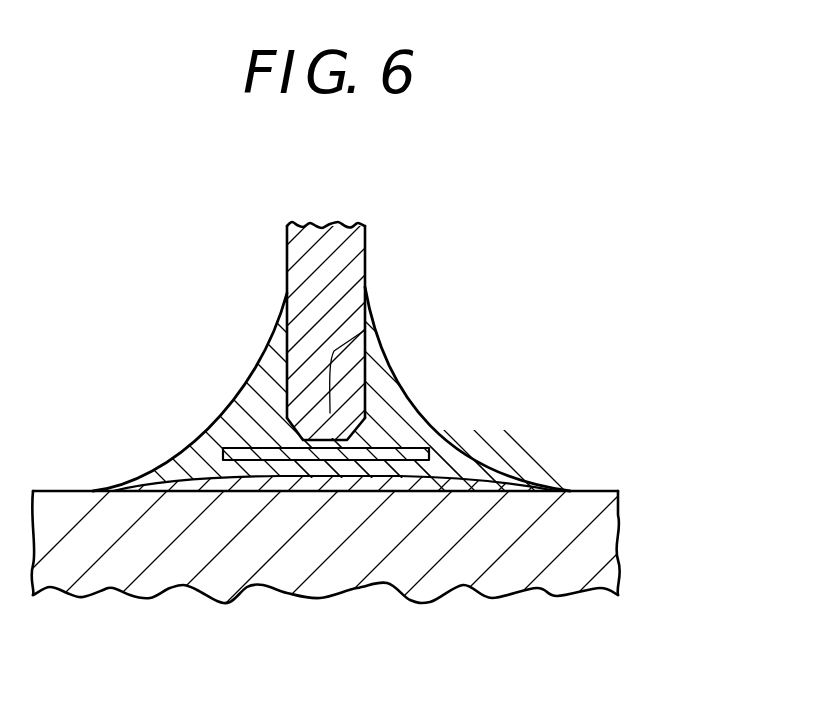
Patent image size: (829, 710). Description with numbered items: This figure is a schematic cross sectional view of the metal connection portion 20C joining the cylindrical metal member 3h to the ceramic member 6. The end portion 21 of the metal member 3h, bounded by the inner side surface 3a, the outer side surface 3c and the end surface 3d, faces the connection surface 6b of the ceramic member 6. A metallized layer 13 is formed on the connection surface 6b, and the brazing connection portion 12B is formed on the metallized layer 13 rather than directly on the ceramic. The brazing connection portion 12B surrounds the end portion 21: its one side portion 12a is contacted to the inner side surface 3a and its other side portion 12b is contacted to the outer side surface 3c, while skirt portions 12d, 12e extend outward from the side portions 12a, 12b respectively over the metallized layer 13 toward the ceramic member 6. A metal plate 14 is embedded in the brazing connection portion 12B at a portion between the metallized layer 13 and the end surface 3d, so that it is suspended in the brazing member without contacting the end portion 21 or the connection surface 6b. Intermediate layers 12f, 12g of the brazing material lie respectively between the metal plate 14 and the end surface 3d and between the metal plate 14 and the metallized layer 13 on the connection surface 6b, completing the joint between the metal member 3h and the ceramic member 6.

The metal connection portion 20C is at (506, 330).
The cylindrical metal member 3h is at (310, 233).
The outer side surface 3c is at (287, 258).
The inner side surface 3a is at (367, 253).
The end surface 3d is at (308, 443).
The end portion 21 is at (365, 330).
The brazing connection portion 12B is at (446, 395).
The other side portion 12b is at (258, 363).
The one side portion 12a is at (388, 372).
The intermediate layer 12f is at (400, 422).
The skirt portion 12d is at (488, 475).
The intermediate layer 12g is at (367, 470).
The metallized layer 13 is at (343, 470).
The skirt portion 12e is at (182, 468).
The metal plate 14 is at (288, 459).
The ceramic member 6 is at (595, 538).
The connection surface 6b is at (592, 492).